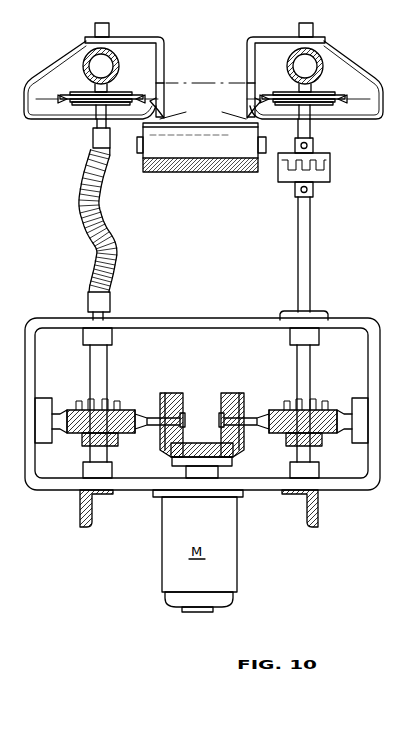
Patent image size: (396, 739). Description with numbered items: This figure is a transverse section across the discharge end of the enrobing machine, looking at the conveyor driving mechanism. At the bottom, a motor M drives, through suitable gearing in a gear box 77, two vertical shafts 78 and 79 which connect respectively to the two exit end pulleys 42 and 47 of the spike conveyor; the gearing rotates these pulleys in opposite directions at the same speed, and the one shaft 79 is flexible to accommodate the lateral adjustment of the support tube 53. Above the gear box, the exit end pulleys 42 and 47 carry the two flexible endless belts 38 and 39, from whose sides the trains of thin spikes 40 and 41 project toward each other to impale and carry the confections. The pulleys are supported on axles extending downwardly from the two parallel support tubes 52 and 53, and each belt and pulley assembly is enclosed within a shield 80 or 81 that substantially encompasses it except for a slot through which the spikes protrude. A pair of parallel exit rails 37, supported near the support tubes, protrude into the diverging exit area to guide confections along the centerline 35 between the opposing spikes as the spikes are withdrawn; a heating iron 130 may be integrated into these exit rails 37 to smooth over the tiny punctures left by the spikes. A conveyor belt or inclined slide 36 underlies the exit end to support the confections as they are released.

The center line / axis 35 is at (205, 82).
The conveyor belt or inclined slide 36 is at (194, 160).
The exit rails 37 is at (161, 76).
The flexible endless belt 38 is at (342, 100).
The flexible endless belt 39 is at (62, 101).
The thin spikes 40 is at (248, 103).
The thin spikes 41 is at (160, 102).
The exit end pulley 42 is at (320, 97).
The exit end pulley 47 is at (88, 93).
The support tube 52 is at (289, 66).
The support tube 53 is at (118, 68).
The gear box 77 is at (192, 314).
The vertical shaft 78 is at (302, 250).
The flexible vertical shaft 79 is at (118, 256).
The shield 80 is at (352, 68).
The shield 81 is at (64, 65).
The heating iron 130 is at (203, 109).